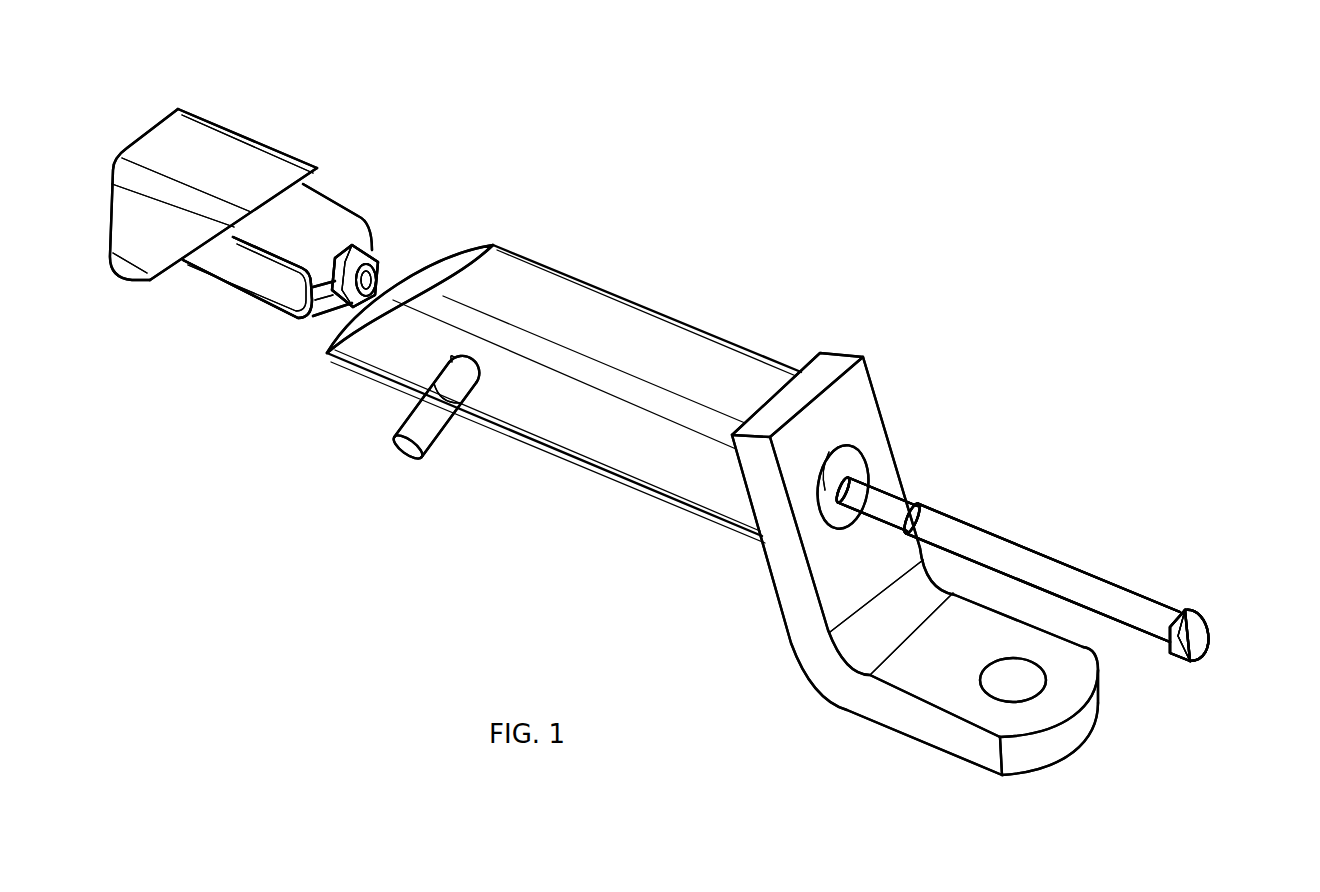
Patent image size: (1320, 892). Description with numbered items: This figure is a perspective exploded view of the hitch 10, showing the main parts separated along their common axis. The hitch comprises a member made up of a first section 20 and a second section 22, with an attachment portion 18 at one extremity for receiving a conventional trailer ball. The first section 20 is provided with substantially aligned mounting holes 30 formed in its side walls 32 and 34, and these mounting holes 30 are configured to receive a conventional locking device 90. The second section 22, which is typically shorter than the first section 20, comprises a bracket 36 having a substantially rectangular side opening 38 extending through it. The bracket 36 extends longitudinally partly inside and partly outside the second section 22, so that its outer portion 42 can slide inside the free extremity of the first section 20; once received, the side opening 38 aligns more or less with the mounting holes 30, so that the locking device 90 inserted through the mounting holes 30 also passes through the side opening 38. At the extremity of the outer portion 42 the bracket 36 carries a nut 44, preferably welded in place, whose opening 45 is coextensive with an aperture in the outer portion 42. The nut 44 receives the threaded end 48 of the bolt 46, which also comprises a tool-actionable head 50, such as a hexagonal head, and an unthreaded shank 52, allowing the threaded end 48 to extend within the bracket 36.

The hitch 10 is at (807, 310).
The attachment portion 18 is at (852, 407).
The first section 20 is at (613, 312).
The second section 22 is at (237, 152).
The mounting holes 30 is at (480, 383).
The side wall 32 is at (357, 353).
The side wall 34 is at (462, 250).
The bracket 36 is at (300, 206).
The side opening 38 is at (242, 273).
The outer portion 42 is at (374, 244).
The nut 44 is at (335, 303).
The opening 45 is at (385, 262).
The bolt 46 is at (1060, 543).
The threaded end 48 is at (880, 500).
The tool-actionable head 50 is at (1207, 637).
The unthreaded shank 52 is at (1113, 600).
The locking device 90 is at (402, 448).